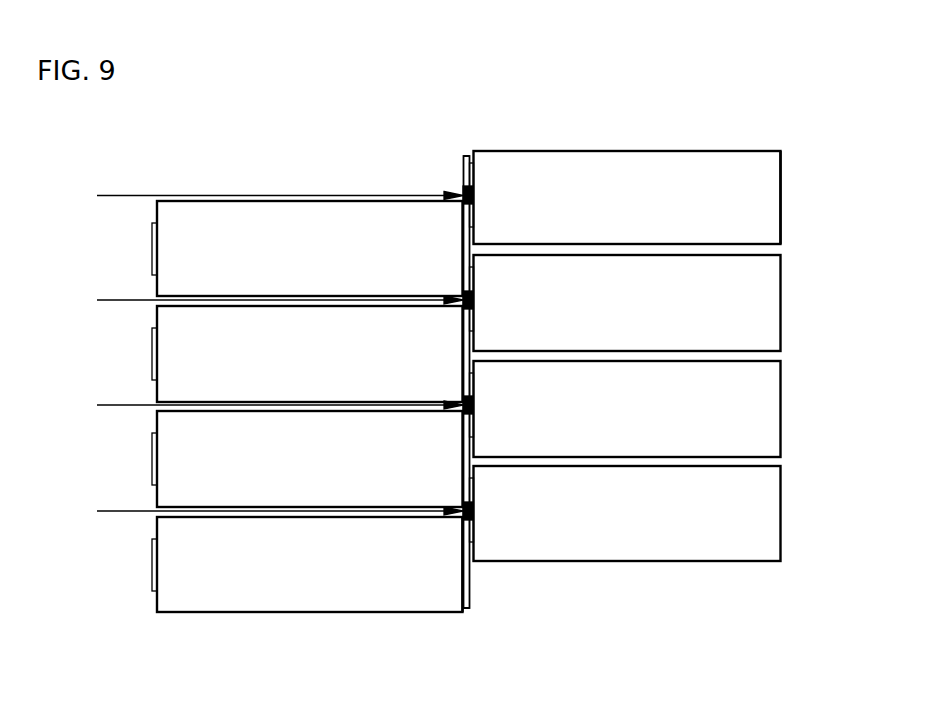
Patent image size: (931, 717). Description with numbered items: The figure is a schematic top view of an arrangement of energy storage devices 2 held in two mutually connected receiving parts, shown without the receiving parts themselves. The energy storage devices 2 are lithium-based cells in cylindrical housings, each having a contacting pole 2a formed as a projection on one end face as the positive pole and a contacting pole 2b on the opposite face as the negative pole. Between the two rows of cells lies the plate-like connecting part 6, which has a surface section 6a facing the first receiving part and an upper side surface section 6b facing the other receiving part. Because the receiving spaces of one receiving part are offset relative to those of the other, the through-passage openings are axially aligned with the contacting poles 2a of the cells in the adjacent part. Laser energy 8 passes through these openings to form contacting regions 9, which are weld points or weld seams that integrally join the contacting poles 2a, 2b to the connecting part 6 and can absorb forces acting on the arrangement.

The energy storage device 2 is at (698, 168).
The contacting pole 2a is at (468, 152).
The contacting pole 2b is at (781, 207).
The connecting part 6 is at (480, 578).
The surface section 6a is at (463, 160).
The upper side surface section 6b is at (470, 567).
The laser energy 8 is at (132, 195).
The contacting region 9 is at (463, 193).